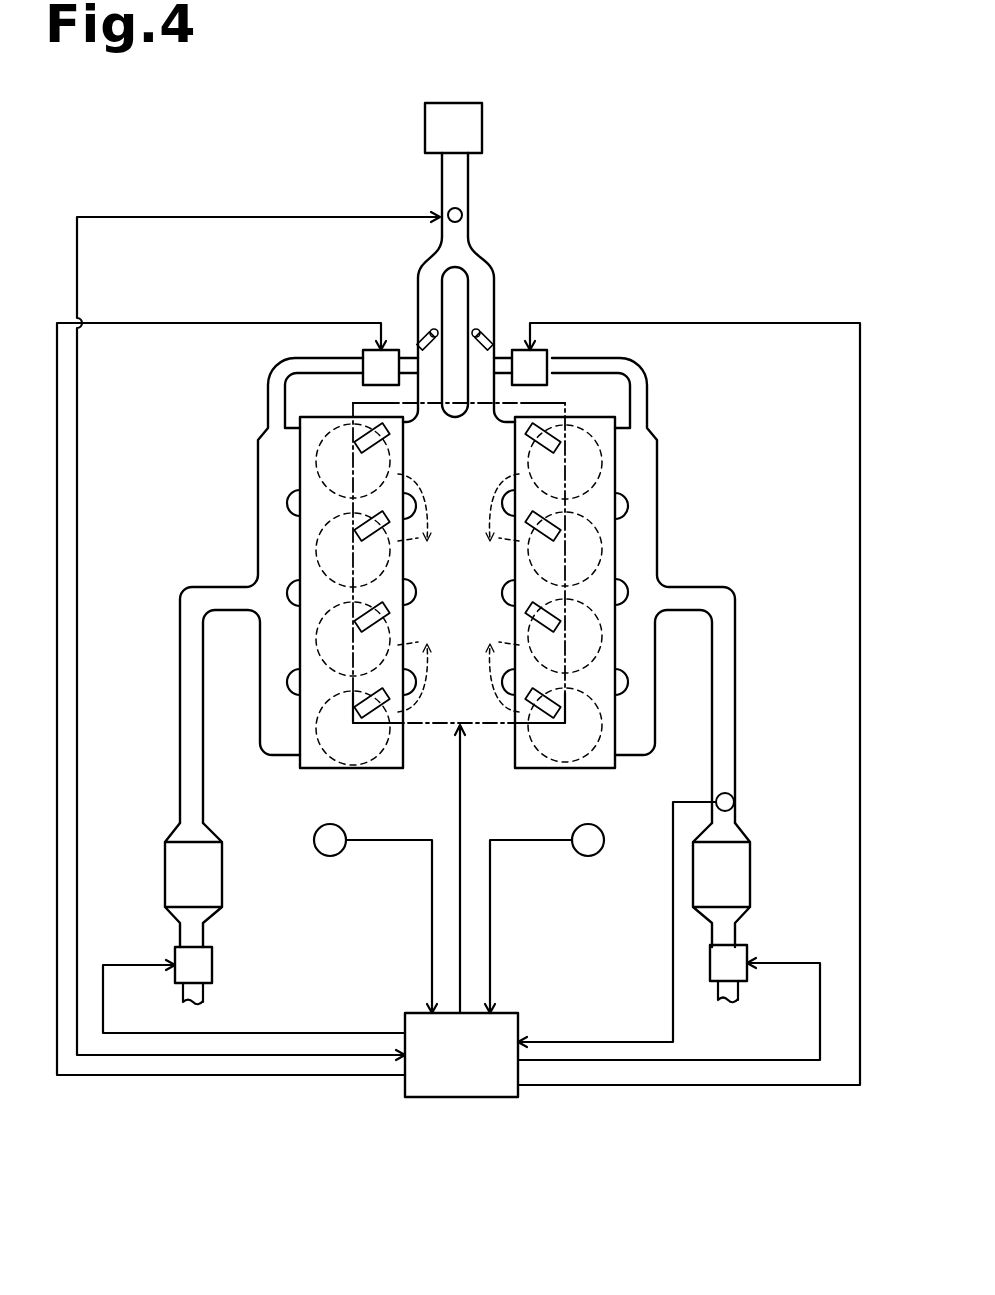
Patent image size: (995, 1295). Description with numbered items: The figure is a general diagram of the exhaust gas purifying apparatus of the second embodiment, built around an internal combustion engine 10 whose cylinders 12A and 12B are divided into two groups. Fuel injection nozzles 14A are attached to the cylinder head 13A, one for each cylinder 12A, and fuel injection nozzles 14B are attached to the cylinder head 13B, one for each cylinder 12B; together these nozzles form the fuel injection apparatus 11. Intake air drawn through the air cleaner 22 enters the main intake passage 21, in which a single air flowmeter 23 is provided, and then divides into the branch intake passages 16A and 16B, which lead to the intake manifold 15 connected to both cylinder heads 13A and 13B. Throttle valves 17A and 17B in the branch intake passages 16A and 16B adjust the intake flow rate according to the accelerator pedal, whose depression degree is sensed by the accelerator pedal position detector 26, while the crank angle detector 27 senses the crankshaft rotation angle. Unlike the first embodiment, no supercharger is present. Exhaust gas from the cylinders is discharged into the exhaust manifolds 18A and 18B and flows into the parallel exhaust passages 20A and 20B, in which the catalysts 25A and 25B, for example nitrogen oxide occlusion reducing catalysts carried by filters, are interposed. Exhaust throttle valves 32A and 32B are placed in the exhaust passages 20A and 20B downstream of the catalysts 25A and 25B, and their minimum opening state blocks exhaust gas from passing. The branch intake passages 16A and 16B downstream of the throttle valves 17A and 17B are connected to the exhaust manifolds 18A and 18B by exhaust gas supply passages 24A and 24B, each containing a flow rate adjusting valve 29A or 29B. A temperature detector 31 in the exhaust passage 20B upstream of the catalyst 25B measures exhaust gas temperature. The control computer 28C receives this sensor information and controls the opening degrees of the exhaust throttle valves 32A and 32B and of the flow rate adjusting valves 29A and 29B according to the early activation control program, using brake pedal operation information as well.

The internal combustion engine 10 is at (190, 186).
The fuel injection apparatus 11 is at (426, 726).
The cylinders 12A is at (428, 593).
The cylinders 12B is at (493, 593).
The cylinder head 13A is at (325, 769).
The cylinder head 13B is at (592, 768).
The fuel injection nozzles 14A is at (356, 533).
The fuel injection nozzles 14B is at (558, 533).
The intake manifold 15 is at (487, 748).
The branch intake passage 16A is at (433, 322).
The branch intake passage 16B is at (477, 322).
The throttle valve 17A is at (416, 263).
The throttle valve 17B is at (496, 263).
The exhaust manifold 18A is at (265, 731).
The exhaust manifold 18B is at (647, 705).
The exhaust passage 20A is at (199, 779).
The exhaust passage 20B is at (718, 779).
The main intake passage 21 is at (468, 178).
The air cleaner 22 is at (482, 128).
The air flowmeter 23 is at (448, 211).
The exhaust gas supply passage 24A is at (352, 367).
The exhaust gas supply passage 24B is at (559, 367).
The catalyst 25A is at (166, 878).
The catalyst 25B is at (755, 878).
The accelerator pedal position detector 26 is at (341, 853).
The crank angle detector 27 is at (579, 853).
The control computer 28C is at (462, 1097).
The flow rate adjusting valve 29A is at (422, 335).
The flow rate adjusting valve 29B is at (489, 335).
The temperature detector 31 is at (742, 803).
The exhaust throttle valve 32A is at (213, 964).
The exhaust throttle valve 32B is at (701, 983).